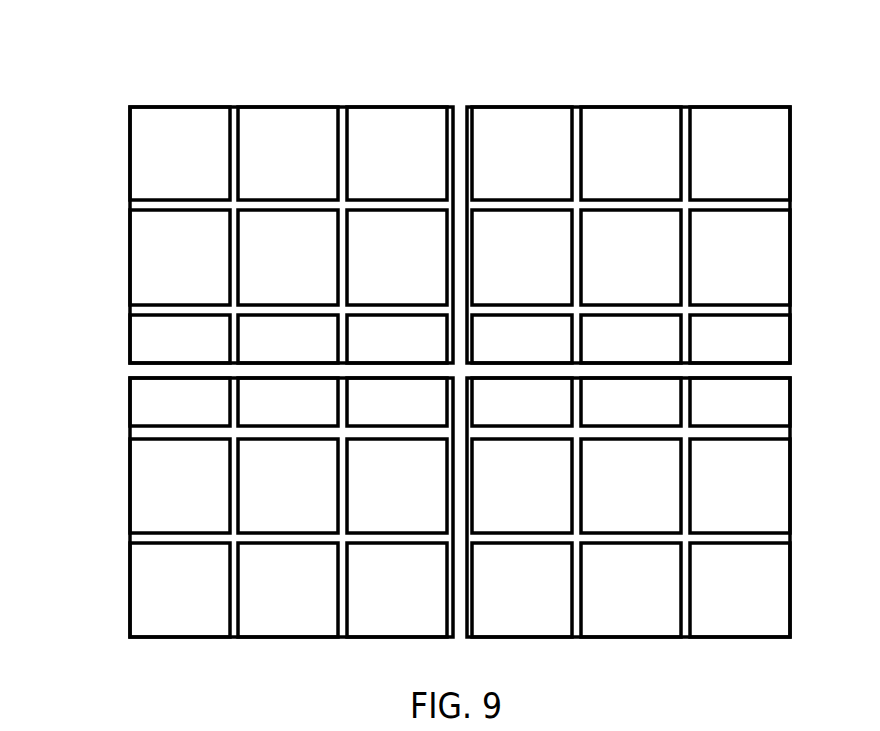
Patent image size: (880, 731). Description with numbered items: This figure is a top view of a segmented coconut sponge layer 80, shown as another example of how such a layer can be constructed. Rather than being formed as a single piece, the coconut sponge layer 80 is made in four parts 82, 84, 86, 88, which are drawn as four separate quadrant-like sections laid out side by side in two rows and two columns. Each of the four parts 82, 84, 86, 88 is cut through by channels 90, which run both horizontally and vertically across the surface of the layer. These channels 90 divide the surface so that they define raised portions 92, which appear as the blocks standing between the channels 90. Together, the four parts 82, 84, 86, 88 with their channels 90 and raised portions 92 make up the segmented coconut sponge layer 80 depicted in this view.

The coconut sponge layer 80 is at (76, 70).
The first part 82 is at (130, 272).
The second part 84 is at (130, 475).
The third part 86 is at (790, 168).
The fourth part 88 is at (790, 465).
The channels 90 is at (790, 309).
The raised portions 92 is at (790, 240).